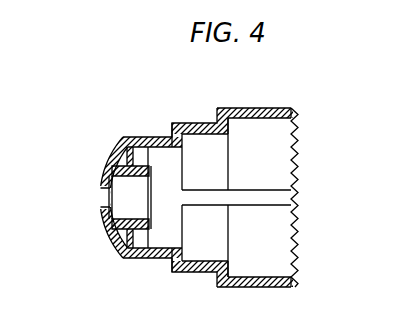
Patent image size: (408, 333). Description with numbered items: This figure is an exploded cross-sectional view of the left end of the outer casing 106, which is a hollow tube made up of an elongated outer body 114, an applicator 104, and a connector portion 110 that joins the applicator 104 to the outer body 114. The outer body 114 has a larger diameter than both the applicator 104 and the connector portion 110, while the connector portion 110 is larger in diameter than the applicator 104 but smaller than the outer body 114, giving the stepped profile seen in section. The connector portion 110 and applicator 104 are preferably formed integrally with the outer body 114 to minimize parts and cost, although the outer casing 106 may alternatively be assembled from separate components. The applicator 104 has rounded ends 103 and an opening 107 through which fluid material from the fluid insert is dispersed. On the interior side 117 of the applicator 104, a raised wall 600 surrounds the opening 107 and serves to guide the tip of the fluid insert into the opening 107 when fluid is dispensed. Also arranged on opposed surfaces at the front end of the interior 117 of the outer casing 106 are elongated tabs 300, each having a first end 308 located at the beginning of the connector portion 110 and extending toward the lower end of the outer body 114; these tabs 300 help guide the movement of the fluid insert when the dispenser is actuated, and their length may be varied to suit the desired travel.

The applicator 104 is at (116, 108).
The rounded ends 103 is at (126, 138).
The opening 107 is at (102, 198).
The raised wall 600 is at (143, 167).
The connector portion 110 is at (195, 124).
The outer body 114 is at (281, 107).
The interior side 117 is at (297, 283).
The first end 308 is at (186, 190).
The tabs 300 is at (295, 180).
The outer casing 106 is at (313, 122).